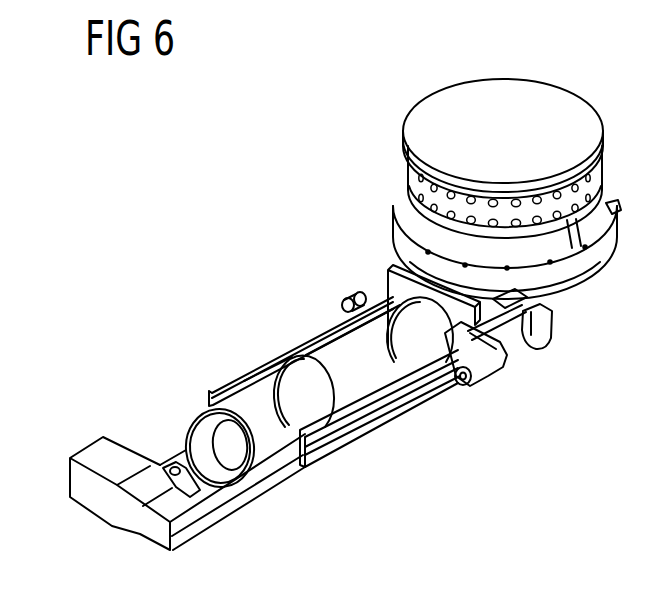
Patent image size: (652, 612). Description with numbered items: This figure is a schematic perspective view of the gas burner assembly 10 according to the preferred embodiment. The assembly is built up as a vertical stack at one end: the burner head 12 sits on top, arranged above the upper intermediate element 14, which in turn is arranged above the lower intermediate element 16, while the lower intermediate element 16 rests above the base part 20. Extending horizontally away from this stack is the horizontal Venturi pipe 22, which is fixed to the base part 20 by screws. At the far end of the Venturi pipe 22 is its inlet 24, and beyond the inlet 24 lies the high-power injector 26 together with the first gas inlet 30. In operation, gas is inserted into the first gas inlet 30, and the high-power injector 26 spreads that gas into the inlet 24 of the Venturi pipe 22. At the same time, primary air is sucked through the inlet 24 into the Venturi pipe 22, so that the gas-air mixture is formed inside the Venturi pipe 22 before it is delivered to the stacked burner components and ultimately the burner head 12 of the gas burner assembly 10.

The gas burner assembly 10 is at (200, 212).
The burner head 12 is at (428, 121).
The upper intermediate element 14 is at (406, 213).
The lower intermediate element 16 is at (394, 246).
The base part 20 is at (536, 342).
The horizontal Venturi pipe 22 is at (300, 345).
The inlet 24 is at (196, 440).
The high-power injector 26 is at (205, 480).
The first gas inlet 30 is at (102, 455).